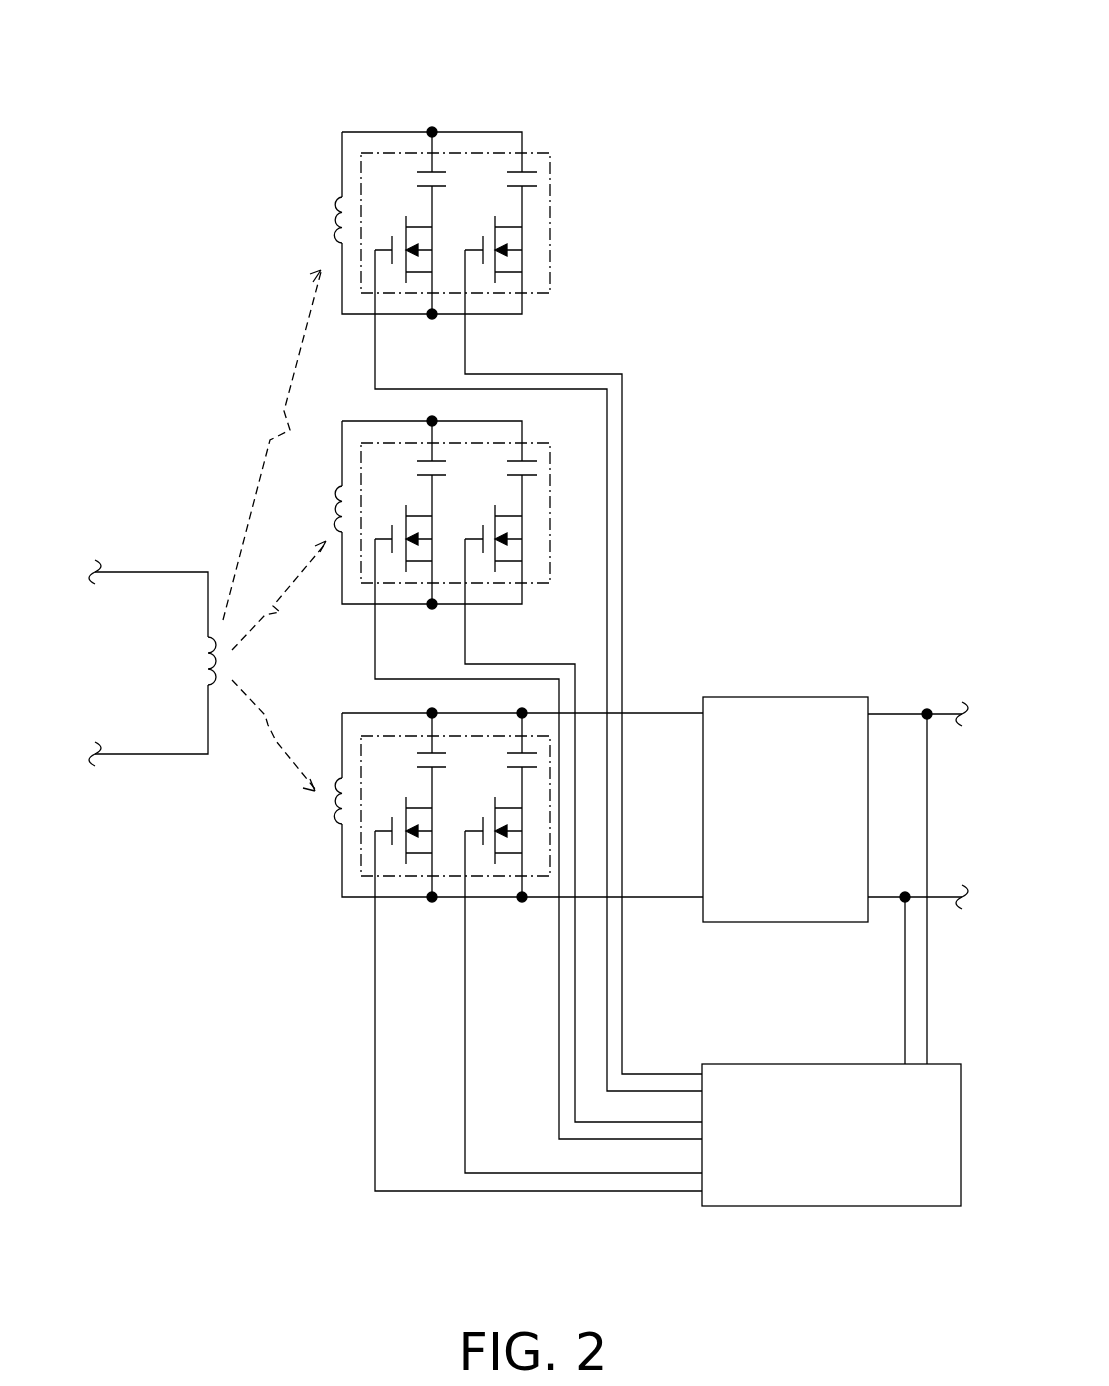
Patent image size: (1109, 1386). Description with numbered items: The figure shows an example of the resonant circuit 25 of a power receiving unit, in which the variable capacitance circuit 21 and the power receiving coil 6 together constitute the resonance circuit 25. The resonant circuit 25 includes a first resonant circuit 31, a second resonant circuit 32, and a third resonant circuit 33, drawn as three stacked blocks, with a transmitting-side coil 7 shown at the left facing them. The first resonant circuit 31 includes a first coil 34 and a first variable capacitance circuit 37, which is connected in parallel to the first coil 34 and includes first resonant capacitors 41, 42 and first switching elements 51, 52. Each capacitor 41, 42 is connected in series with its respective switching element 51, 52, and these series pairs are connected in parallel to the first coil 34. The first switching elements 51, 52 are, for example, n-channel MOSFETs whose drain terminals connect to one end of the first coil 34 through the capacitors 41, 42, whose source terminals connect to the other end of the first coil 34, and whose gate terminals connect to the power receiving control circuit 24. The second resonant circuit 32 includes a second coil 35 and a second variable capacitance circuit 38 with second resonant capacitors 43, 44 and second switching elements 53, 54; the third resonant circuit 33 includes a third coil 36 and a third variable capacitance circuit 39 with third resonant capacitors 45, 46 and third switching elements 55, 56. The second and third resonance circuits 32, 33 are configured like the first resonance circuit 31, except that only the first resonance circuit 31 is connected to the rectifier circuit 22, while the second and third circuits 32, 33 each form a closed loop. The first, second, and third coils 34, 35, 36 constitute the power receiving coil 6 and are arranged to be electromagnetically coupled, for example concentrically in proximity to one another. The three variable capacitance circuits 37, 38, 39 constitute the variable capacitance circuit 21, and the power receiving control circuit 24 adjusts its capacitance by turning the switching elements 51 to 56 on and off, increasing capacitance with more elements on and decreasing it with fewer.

The power receiving coil 6 is at (323, 175).
The power transmission coil 7 is at (208, 662).
The variable capacitance circuit 21 is at (543, 120).
The rectifier circuit 22 is at (787, 697).
The power receiving control circuit 24 is at (828, 1208).
The resonance circuit 25 is at (438, 100).
The first resonant circuit 31 is at (436, 816).
The second resonant circuit 32 is at (485, 517).
The third resonant circuit 33 is at (469, 160).
The first coil 34 is at (327, 814).
The second coil 35 is at (327, 509).
The third coil 36 is at (327, 222).
The first variable capacitance circuit 37 is at (550, 783).
The second variable capacitance circuit 38 is at (550, 490).
The third variable capacitance circuit 39 is at (550, 200).
The first resonant capacitor 41 is at (532, 756).
The first resonant capacitor 42 is at (438, 771).
The second resonant capacitor 43 is at (532, 463).
The second resonant capacitor 44 is at (438, 479).
The third resonant capacitor 45 is at (532, 174).
The third resonant capacitor 46 is at (438, 189).
The first switching element 51 is at (510, 853).
The first switching element 52 is at (405, 812).
The second switching element 53 is at (510, 561).
The second switching element 54 is at (405, 519).
The third switching element 55 is at (510, 271).
The third switching element 56 is at (405, 230).